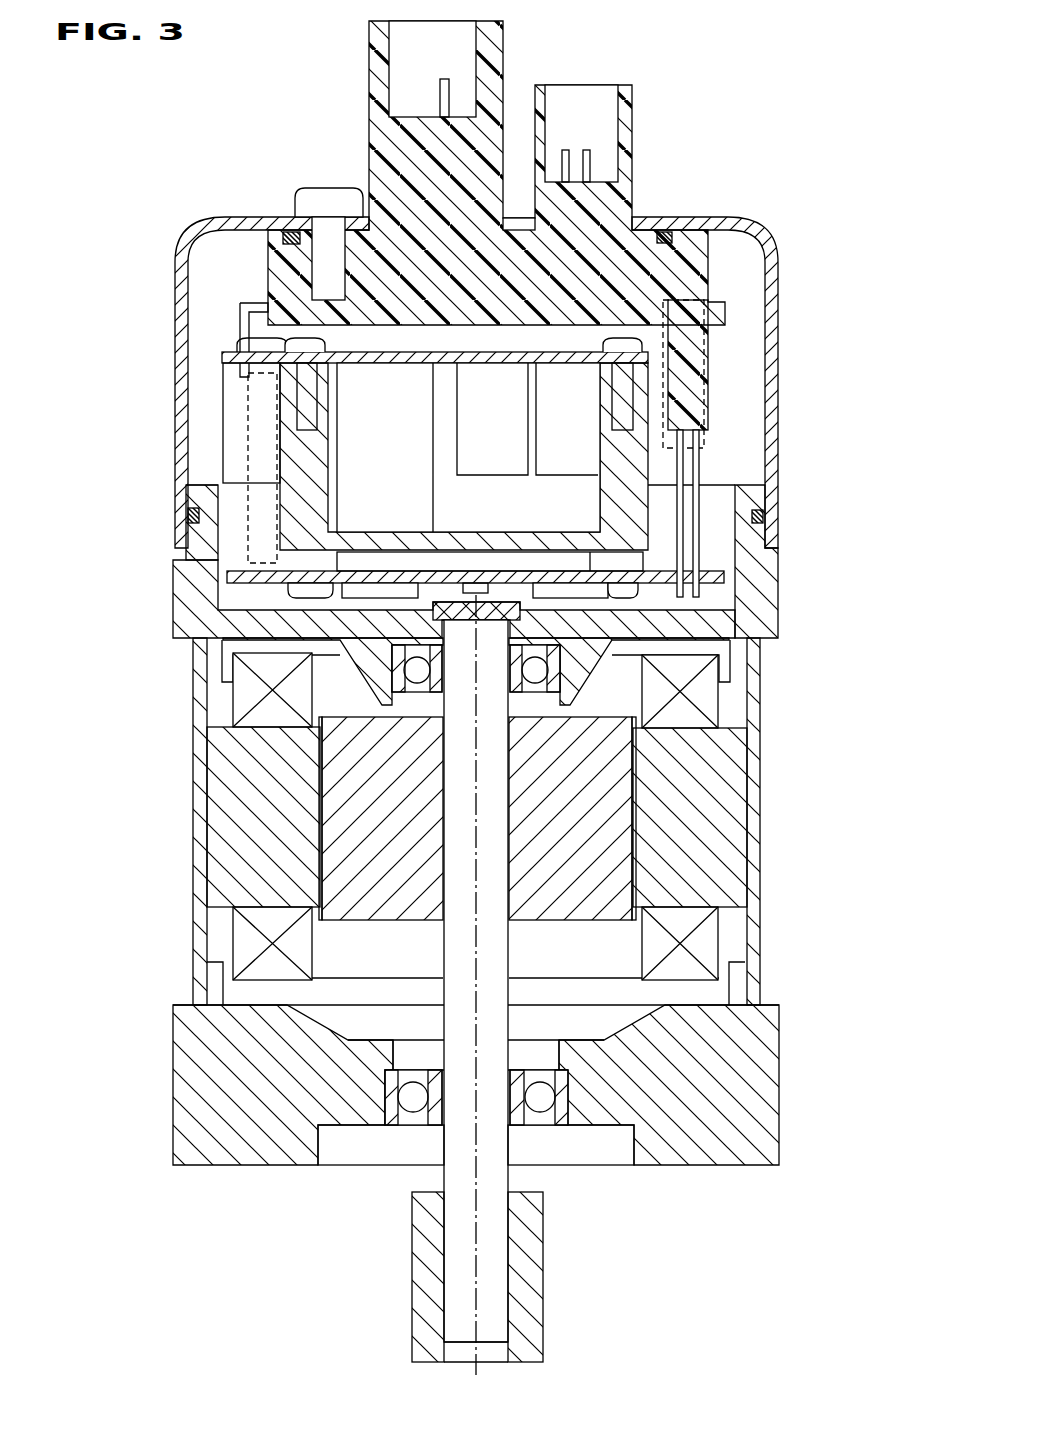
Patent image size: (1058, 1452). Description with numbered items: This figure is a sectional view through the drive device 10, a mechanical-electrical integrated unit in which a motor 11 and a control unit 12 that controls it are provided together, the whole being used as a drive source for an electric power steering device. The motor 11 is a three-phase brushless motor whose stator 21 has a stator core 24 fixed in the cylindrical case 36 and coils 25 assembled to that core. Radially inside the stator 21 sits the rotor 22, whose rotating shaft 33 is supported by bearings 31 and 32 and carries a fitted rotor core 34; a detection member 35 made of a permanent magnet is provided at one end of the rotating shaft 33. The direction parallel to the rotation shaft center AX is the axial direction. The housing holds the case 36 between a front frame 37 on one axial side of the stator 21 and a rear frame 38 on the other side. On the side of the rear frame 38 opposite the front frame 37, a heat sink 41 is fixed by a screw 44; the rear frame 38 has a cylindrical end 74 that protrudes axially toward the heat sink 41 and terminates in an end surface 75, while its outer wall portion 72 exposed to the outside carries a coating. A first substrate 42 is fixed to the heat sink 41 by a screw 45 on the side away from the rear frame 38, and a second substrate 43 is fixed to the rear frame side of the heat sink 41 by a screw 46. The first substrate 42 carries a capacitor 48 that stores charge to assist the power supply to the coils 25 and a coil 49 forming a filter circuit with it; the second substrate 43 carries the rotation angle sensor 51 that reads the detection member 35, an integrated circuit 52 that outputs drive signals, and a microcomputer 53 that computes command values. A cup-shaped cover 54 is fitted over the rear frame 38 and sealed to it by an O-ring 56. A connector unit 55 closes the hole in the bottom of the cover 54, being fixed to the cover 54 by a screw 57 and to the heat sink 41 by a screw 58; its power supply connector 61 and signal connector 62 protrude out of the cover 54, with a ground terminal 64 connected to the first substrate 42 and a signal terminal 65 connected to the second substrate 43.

The drive device 10 is at (486, 698).
The motor 11 is at (486, 979).
The control unit 12 is at (436, 362).
The stator 21 is at (410, 816).
The rotor 22 is at (608, 818).
The stator core 24 is at (241, 775).
The coil 25 is at (241, 695).
The bearing 31 is at (542, 1097).
The bearing 32 is at (498, 787).
The rotating shaft 33 is at (610, 778).
The rotor core 34 is at (603, 822).
The detection member 35 is at (533, 670).
The case 36 is at (200, 832).
The front frame 37 is at (190, 1087).
The rear frame 38 is at (180, 600).
The heat sink 41 is at (302, 455).
The first substrate 42 is at (217, 356).
The second substrate 43 is at (240, 572).
The screw 44 is at (260, 337).
The screw 45 is at (300, 338).
The screw 46 is at (305, 593).
The capacitor 48 is at (577, 420).
The coil 49 is at (360, 427).
The rotation angle sensor 51 is at (540, 641).
The integrated circuit 52 is at (235, 655).
The microcomputer 53 is at (597, 594).
The cover 54 is at (178, 282).
The connector unit 55 is at (695, 272).
The O-ring 56 is at (190, 516).
The screw 57 is at (328, 188).
The screw 58 is at (706, 313).
The power supply connector 61 is at (378, 68).
The signal connector 62 is at (628, 112).
The ground terminal 64 is at (248, 303).
The signal terminal 65 is at (698, 467).
The outer wall portion 72 is at (778, 575).
The cylindrical end 74 is at (168, 502).
The end surface 75 is at (205, 487).
The rotation shaft center AX is at (453, 1263).